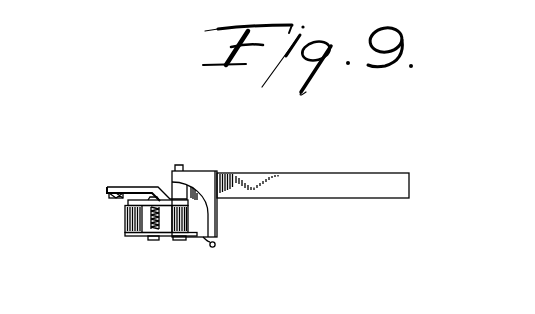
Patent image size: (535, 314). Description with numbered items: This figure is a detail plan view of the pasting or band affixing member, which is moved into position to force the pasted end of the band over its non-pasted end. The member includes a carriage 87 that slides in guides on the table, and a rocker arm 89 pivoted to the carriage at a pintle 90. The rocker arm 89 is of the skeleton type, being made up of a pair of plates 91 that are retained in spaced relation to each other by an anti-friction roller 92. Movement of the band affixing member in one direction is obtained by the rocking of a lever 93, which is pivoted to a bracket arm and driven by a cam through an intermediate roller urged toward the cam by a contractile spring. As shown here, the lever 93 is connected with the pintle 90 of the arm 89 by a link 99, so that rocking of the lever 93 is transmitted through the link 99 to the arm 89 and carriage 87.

The carriage 87 is at (286, 186).
The rocker arm 89 is at (167, 221).
The pintle 90 is at (184, 166).
The plates 91 is at (136, 233).
The anti-friction roller 92 is at (131, 215).
The lever 93 is at (109, 198).
The link 99 is at (138, 187).